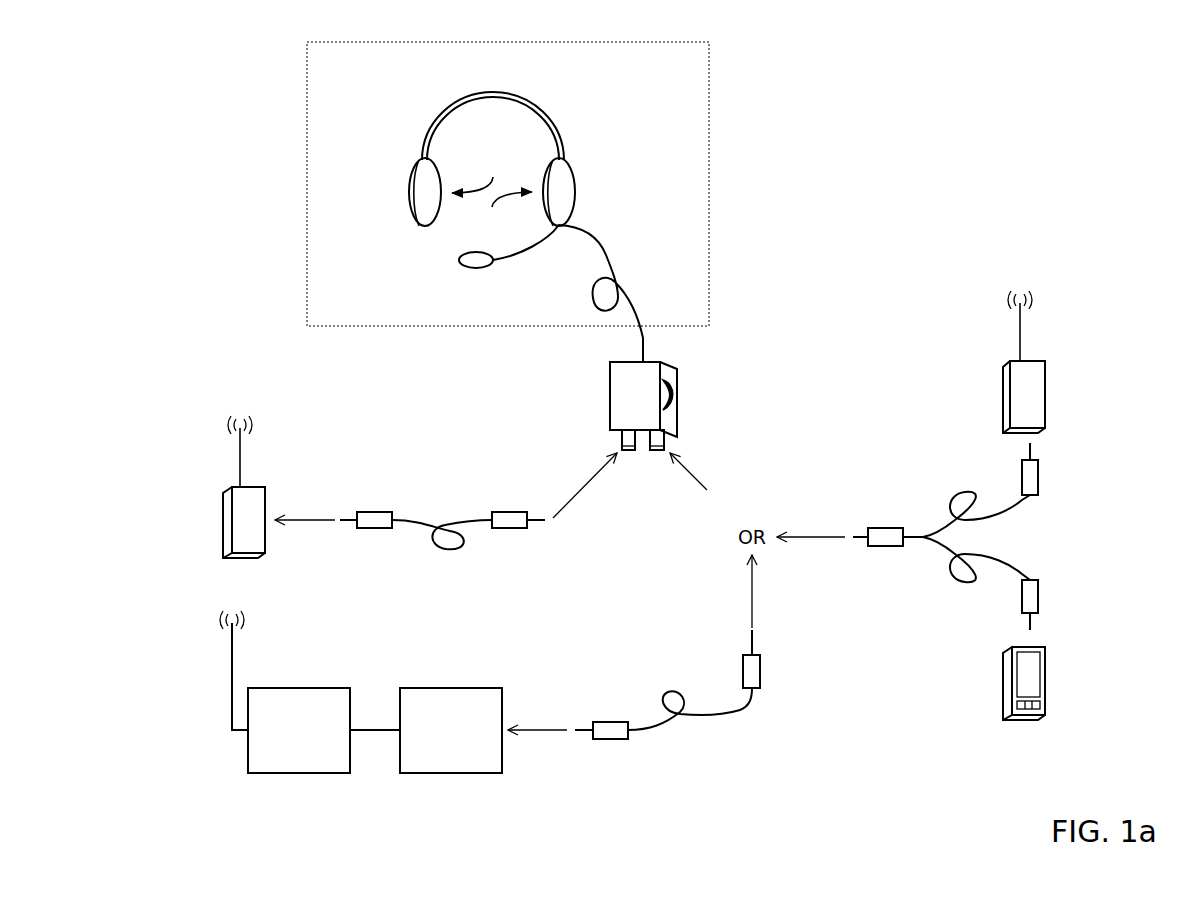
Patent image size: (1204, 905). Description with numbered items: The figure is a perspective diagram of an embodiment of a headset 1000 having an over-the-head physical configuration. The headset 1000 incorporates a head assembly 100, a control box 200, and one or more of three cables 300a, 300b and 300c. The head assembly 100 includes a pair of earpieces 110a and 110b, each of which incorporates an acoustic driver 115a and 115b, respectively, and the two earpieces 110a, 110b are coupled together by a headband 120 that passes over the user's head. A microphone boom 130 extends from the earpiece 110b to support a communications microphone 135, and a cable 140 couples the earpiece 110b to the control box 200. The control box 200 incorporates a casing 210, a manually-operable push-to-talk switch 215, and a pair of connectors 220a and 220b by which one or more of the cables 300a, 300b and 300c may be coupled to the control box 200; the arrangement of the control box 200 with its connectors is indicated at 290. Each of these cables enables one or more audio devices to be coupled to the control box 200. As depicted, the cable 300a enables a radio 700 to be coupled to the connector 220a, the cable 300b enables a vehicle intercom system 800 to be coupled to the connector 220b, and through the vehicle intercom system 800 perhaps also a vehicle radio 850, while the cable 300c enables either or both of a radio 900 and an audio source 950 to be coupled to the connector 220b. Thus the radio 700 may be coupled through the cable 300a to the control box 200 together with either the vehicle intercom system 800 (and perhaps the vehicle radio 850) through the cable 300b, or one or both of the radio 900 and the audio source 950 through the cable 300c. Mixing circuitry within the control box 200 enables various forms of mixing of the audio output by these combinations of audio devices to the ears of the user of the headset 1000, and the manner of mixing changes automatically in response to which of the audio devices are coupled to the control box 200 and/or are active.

The headset 1000 is at (988, 73).
The head assembly 100 is at (307, 127).
The headband 120 is at (493, 92).
The earpiece 110a is at (405, 193).
The earpiece 110b is at (580, 193).
The acoustic driver 115a is at (484, 170).
The acoustic driver 115b is at (500, 214).
The microphone boom 130 is at (520, 257).
The communications microphone 135 is at (458, 260).
The cable 140 is at (600, 242).
The control box 200 is at (643, 399).
The casing 210 is at (610, 385).
The push-to-talk (PTT) switch 215 is at (677, 392).
The adapter assembly 290 is at (592, 418).
The connector 220a is at (622, 444).
The connector 220b is at (664, 444).
The radio 700 is at (223, 537).
The cable 300a is at (452, 557).
The cable 300b is at (667, 675).
The cable 300c is at (945, 590).
The radio 900 is at (1045, 410).
The audio source 950 is at (1045, 688).
The vehicle radio 850 is at (285, 692).
The vehicle intercom system (ICS) 800 is at (451, 730).